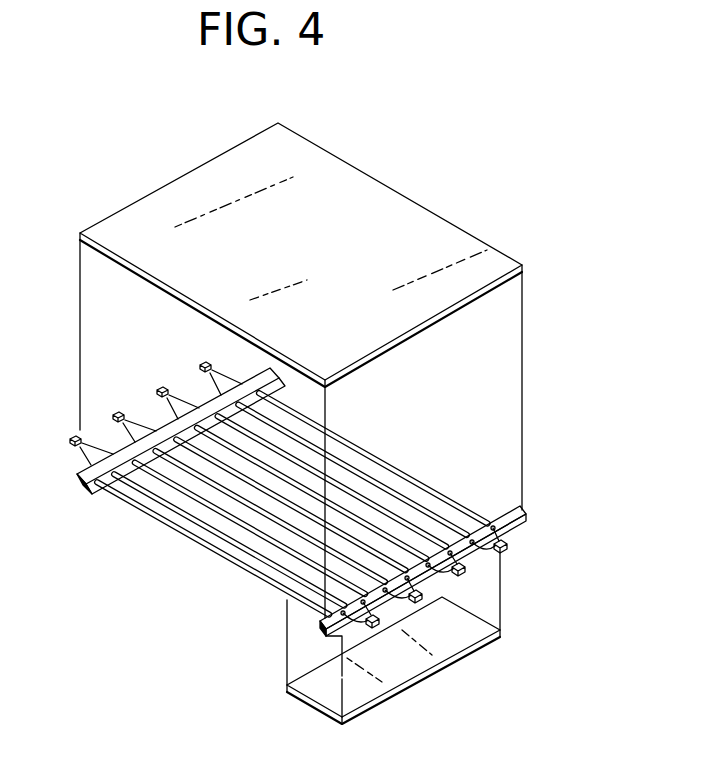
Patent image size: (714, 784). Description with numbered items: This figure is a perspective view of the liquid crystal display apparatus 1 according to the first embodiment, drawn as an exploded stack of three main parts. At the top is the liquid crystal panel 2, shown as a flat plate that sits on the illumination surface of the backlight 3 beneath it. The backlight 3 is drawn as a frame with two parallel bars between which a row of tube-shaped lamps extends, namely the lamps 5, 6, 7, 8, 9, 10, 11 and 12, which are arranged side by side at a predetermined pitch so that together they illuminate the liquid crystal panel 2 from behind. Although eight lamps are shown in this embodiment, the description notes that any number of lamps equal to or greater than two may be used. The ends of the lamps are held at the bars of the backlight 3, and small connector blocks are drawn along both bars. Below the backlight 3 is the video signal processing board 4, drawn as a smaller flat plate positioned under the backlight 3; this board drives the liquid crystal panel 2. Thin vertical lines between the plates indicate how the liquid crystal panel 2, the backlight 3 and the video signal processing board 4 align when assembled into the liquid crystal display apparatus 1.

The liquid crystal display apparatus 1 is at (517, 153).
The liquid crystal panel 2 is at (412, 227).
The backlight 3 is at (530, 518).
The video signal processing board 4 is at (402, 662).
The lamp 5 is at (120, 495).
The lamp 6 is at (185, 500).
The lamp 7 is at (233, 502).
The lamp 8 is at (313, 523).
The lamp 9 is at (233, 447).
The lamp 10 is at (305, 468).
The lamp 11 is at (387, 485).
The lamp 12 is at (452, 502).